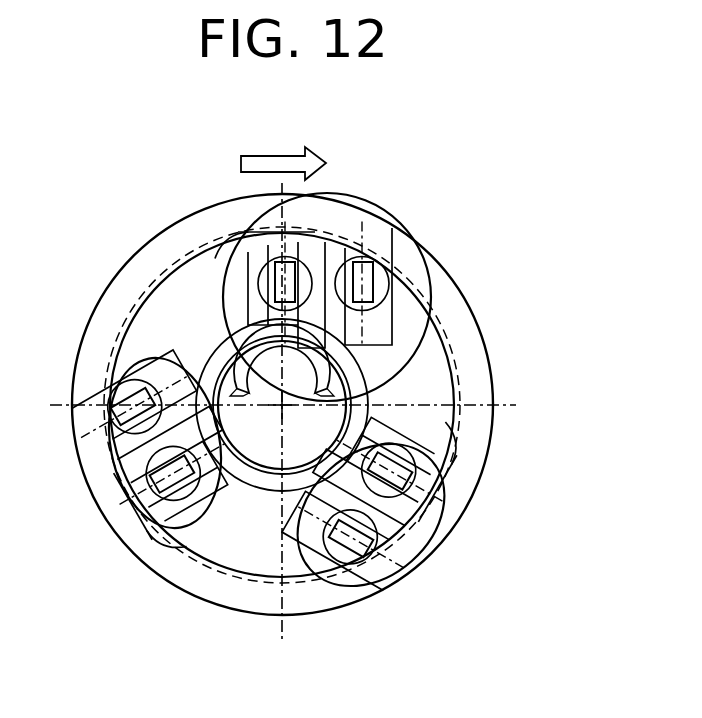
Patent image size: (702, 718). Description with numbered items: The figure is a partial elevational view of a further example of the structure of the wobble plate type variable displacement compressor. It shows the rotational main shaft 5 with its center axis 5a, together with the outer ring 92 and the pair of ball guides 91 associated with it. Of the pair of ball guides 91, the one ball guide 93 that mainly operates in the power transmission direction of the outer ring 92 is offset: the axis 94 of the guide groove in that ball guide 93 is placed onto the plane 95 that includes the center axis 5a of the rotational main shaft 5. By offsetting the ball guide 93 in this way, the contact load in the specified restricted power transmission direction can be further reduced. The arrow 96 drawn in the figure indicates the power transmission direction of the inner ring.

The rotational main shaft 5 is at (350, 420).
The center axis of rotational main shaft 5a is at (279, 410).
The pair of ball guides 91 is at (378, 207).
The outer ring 92 is at (243, 166).
The ball guide 93 is at (289, 238).
The axis of the guide groove 94 is at (283, 193).
The plane including center axis of rotational main shaft 95 is at (292, 598).
The arrow indicating power transmission direction of inner ring 96 is at (304, 372).